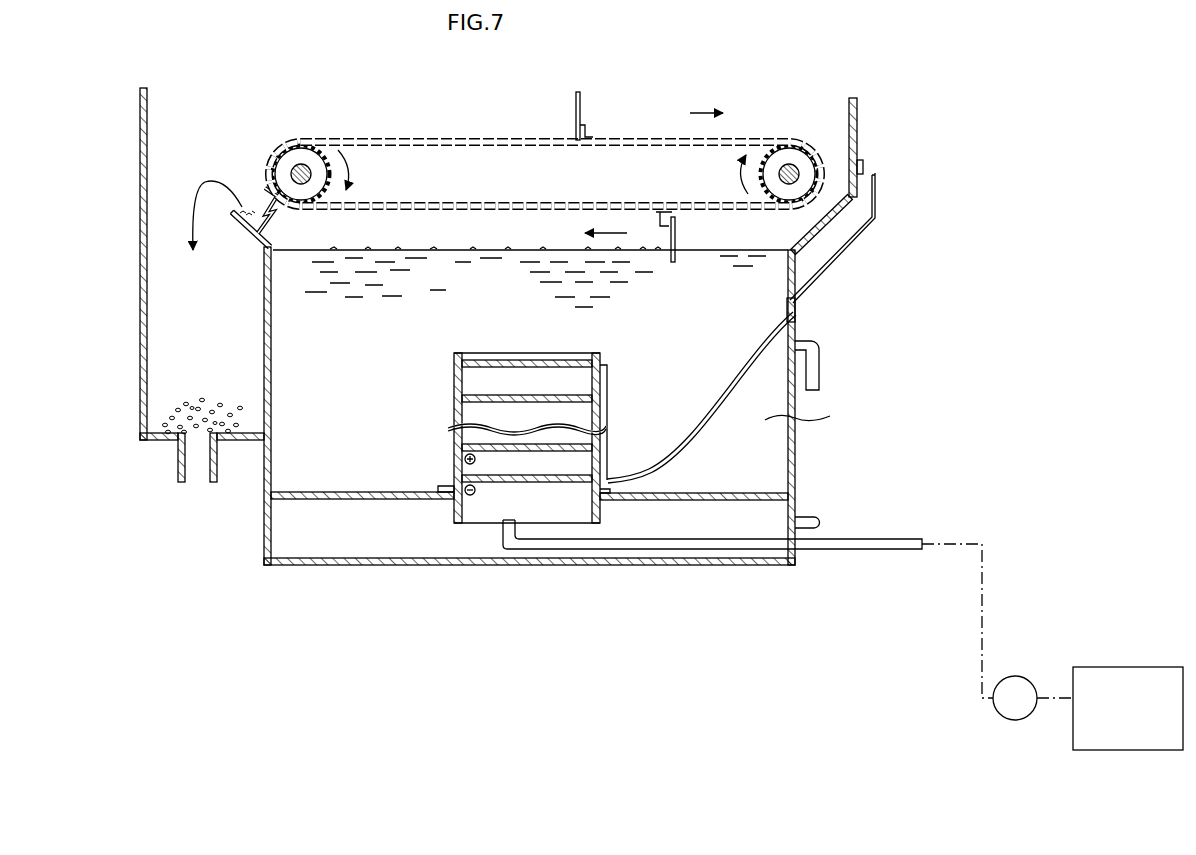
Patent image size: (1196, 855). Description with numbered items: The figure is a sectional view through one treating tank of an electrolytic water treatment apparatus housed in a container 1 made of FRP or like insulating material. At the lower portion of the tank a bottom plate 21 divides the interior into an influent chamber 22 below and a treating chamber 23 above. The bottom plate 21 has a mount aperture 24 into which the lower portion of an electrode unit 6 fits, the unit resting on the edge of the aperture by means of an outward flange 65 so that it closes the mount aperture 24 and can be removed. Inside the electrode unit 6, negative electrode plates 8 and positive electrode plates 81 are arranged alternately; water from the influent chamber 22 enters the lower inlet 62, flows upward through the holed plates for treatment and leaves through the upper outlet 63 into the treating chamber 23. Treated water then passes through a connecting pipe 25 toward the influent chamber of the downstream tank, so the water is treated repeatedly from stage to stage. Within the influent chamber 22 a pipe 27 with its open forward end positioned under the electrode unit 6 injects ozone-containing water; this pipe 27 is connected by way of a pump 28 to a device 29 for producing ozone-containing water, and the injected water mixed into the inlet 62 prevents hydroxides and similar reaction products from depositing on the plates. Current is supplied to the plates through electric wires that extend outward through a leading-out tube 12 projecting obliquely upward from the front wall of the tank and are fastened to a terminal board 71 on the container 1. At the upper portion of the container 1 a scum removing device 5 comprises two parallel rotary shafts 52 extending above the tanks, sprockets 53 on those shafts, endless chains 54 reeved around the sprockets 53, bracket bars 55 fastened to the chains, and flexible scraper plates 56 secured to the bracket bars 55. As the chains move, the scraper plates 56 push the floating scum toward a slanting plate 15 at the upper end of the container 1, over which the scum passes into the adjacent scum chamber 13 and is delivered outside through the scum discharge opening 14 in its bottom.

The container 1 is at (260, 538).
The scum removing device 5 is at (557, 145).
The electrode unit 6 is at (456, 386).
The negative electrode plates 8 is at (512, 481).
The leading-out tube 12 is at (833, 262).
The scum chamber 13 is at (158, 272).
The scum discharge opening 14 is at (178, 468).
The slanting plate 15 is at (248, 226).
The bottom plate 21 is at (660, 494).
The influent chamber 22 is at (752, 517).
The treating chamber 23 is at (832, 414).
The mount aperture 24 is at (598, 494).
The connecting pipe 25 is at (806, 520).
The pipe for injecting ozone-containing water 27 is at (549, 550).
The pump 28 is at (1008, 677).
The device for producing ozone-containing water 29 is at (1102, 667).
The rotary shafts 52 is at (302, 165).
The sprockets 53 is at (295, 150).
The endless chains 54 is at (422, 138).
The bracket bars 55 is at (591, 133).
The scraper plates 56 is at (582, 93).
The inlet 62 is at (468, 524).
The outlet 63 is at (490, 353).
The outward flange 65 is at (443, 487).
The terminal board 71 is at (860, 150).
The positive electrode plates 81 is at (513, 450).